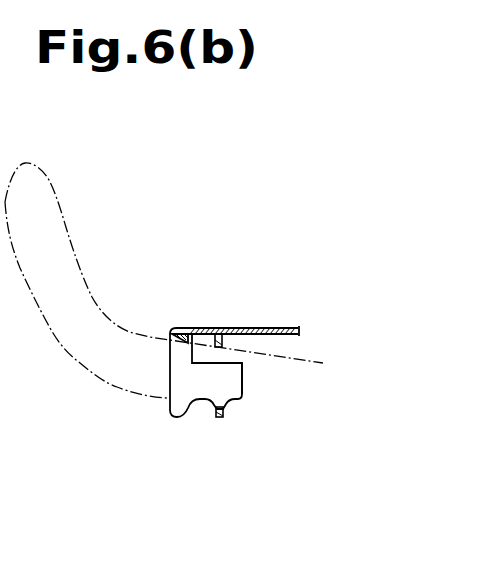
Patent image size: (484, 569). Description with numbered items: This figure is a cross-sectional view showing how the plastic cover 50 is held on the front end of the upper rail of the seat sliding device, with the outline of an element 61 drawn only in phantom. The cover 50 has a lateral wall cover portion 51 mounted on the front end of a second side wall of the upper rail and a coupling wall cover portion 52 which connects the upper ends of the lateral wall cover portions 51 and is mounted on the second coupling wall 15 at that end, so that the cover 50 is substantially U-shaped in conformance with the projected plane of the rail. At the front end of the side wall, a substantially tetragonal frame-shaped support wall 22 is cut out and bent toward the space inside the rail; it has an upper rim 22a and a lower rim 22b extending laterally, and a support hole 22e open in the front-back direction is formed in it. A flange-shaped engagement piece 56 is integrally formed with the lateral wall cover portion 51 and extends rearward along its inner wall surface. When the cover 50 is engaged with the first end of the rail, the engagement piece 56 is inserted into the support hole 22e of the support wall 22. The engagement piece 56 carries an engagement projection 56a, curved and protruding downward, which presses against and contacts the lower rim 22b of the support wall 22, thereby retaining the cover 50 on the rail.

The seat back (seat) 61 is at (58, 203).
The second coupling wall 15 is at (257, 291).
The coupling wall cover portion 52 is at (182, 327).
The support wall 22 is at (220, 333).
The upper rim 22a is at (250, 327).
The lateral wall cover portion 51 is at (172, 373).
The cover 50 is at (215, 370).
The engagement piece 56 is at (228, 443).
The engagement projection 56a is at (240, 450).
The lower rim 22b is at (205, 392).
The support hole 22e is at (242, 402).